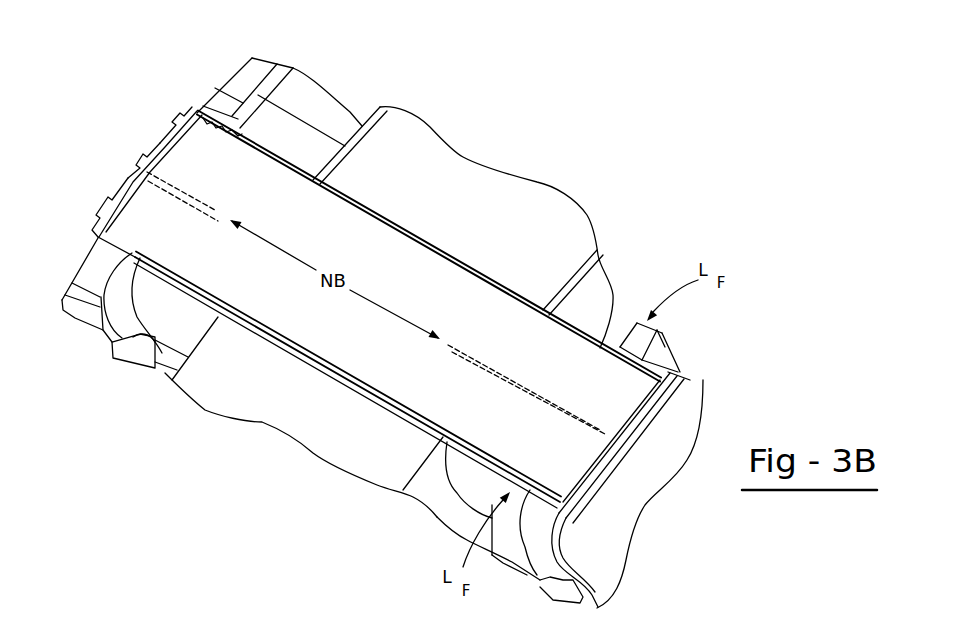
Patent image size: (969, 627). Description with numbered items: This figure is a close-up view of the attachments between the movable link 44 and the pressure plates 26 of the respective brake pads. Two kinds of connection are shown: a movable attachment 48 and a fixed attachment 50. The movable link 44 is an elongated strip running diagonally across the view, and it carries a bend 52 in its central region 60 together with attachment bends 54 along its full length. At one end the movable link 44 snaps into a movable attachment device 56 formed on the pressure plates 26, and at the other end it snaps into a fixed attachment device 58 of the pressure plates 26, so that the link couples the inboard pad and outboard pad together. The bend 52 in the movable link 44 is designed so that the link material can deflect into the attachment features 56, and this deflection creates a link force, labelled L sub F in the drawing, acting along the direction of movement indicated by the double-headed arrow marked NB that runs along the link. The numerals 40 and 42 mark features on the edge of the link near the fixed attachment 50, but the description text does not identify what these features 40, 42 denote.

The pressure plate 26 is at (259, 100).
The lug 40 is at (96, 216).
The lug 42 is at (175, 118).
The movable link 44 is at (487, 317).
The movable attachment 48 is at (670, 356).
The fixed attachment 50 is at (194, 92).
The bend 52 is at (617, 446).
The attachment bend 54 is at (693, 382).
The movable attachment device 56 is at (547, 523).
The fixed attachment device 58 is at (122, 314).
The central region 60 is at (136, 164).